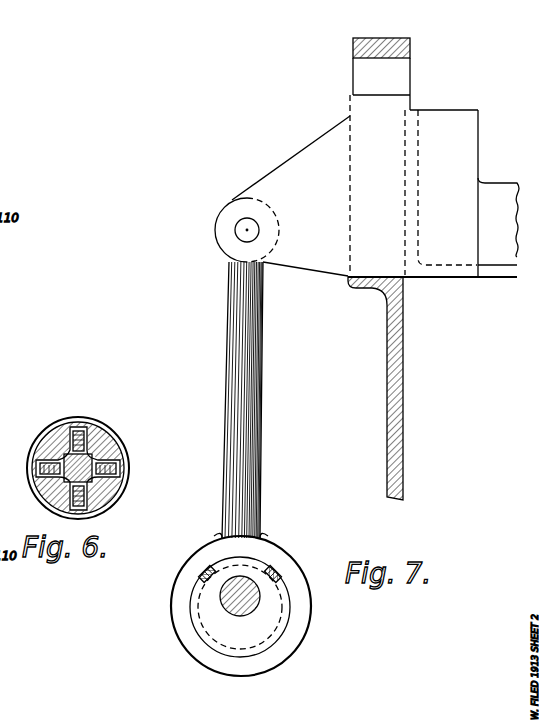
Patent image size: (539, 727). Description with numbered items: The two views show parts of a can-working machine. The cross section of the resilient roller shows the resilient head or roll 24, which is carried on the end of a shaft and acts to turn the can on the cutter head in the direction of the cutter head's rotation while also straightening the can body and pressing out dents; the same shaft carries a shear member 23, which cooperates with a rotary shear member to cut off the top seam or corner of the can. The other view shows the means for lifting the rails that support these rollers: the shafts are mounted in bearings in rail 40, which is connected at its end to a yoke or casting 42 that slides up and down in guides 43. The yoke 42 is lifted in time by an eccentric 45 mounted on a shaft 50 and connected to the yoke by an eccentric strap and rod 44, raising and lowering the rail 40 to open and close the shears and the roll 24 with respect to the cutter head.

In FIG. 6, the shear member 23 is at (98, 436).
In FIG. 6, the resilient head or roll 24 is at (116, 456).
In FIG. 7, the rail 40 is at (492, 186).
In FIG. 7, the yoke or casting 42 is at (268, 176).
In FIG. 7, the guides 43 is at (388, 38).
In FIG. 7, the eccentric strap and rod 44 is at (262, 414).
In FIG. 7, the eccentric 45 is at (275, 630).
In FIG. 7, the shaft 50 is at (250, 580).